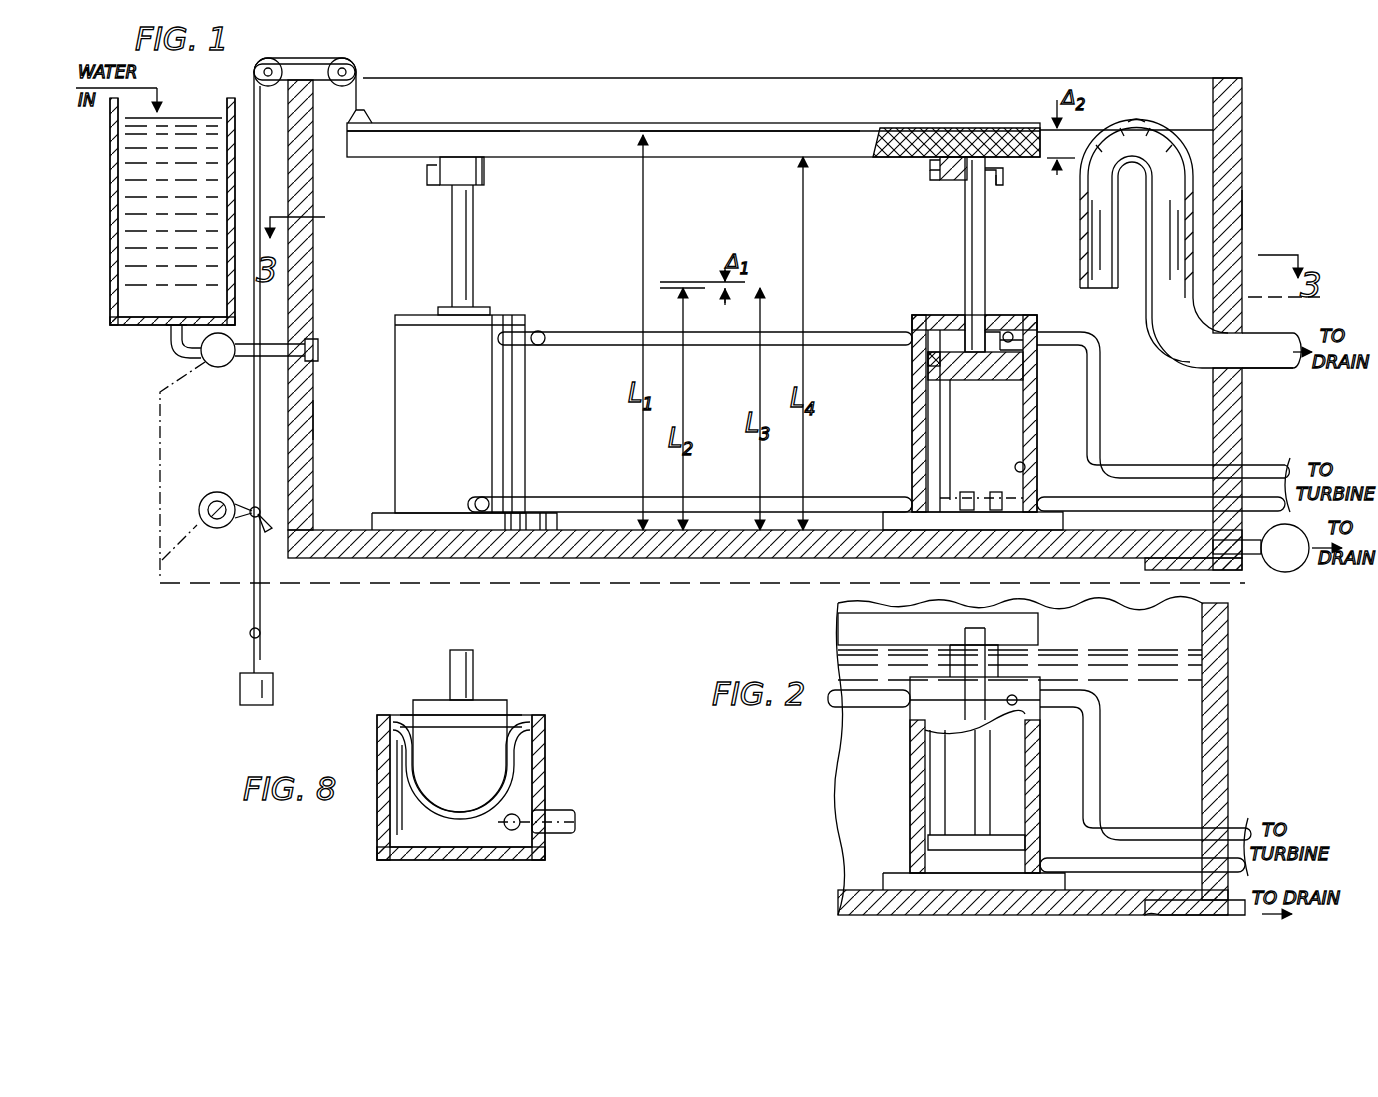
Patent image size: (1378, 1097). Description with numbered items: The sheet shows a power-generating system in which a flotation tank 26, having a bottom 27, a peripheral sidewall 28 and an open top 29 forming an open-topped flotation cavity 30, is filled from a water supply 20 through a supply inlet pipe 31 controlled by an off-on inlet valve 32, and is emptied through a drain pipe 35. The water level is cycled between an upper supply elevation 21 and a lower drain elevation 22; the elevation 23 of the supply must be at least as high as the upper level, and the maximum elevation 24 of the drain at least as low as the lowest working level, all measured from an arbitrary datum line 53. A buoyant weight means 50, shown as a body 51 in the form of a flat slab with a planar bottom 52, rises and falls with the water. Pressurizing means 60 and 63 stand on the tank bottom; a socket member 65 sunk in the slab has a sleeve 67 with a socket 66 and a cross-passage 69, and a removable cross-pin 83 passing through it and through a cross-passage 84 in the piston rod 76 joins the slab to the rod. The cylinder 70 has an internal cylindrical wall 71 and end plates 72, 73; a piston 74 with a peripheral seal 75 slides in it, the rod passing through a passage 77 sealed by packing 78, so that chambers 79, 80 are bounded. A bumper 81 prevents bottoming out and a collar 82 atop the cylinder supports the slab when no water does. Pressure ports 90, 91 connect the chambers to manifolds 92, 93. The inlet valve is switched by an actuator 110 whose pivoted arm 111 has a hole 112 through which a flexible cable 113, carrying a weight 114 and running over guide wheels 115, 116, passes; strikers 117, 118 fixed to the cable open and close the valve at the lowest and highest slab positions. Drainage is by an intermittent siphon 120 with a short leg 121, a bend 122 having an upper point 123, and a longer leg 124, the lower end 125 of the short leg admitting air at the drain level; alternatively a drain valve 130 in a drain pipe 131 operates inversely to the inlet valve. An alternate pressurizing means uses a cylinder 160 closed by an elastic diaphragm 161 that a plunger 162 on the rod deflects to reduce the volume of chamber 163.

In FIG. 1, the supply 20 is at (185, 309).
In FIG. 1, the upper supply elevation 21 is at (1092, 128).
In FIG. 1, the lower drain elevation 22 is at (672, 290).
In FIG. 2, the lower drain elevation 22 is at (1185, 652).
In FIG. 1, the elevation of the water supply 23 is at (173, 112).
In FIG. 1, the maximum elevation of the drain 24 is at (1268, 297).
In FIG. 1, the flotation tank 26 is at (286, 424).
In FIG. 2, the flotation tank 26 is at (1228, 722).
In FIG. 1, the bottom 27 is at (333, 528).
In FIG. 1, the peripheral sidewall 28 is at (313, 452).
In FIG. 1, the open top 29 is at (1200, 78).
In FIG. 1, the flotation cavity 30 is at (1178, 409).
In FIG. 1, the supply inlet pipe 31 is at (192, 352).
In FIG. 1, the inlet valve 32 is at (214, 368).
In FIG. 1, the drain pipe 35 is at (1268, 372).
In FIG. 1, the weight means 50 is at (734, 156).
In FIG. 2, the weight means 50 is at (1040, 624).
In FIG. 1, the body 51 is at (798, 120).
In FIG. 1, the planar bottom 52 is at (556, 148).
In FIG. 1, the datum line 53 is at (598, 528).
In FIG. 1, the pressurizing means 60 is at (973, 385).
In FIG. 2, the pressurizing means 60 is at (1044, 824).
In FIG. 1, the pressurizing means 63 is at (530, 452).
In FIG. 1, the socket member 65 is at (940, 166).
In FIG. 1, the socket 66 is at (958, 186).
In FIG. 1, the sleeve 67 is at (938, 178).
In FIG. 1, the cross-passage 69 is at (990, 186).
In FIG. 1, the cylinder 70 is at (1037, 440).
In FIG. 1, the cylindrical wall 71 is at (1025, 468).
In FIG. 1, the end plate 72 is at (912, 322).
In FIG. 1, the end plate 73 is at (940, 500).
In FIG. 1, the piston 74 is at (950, 372).
In FIG. 1, the peripheral seal 75 is at (912, 372).
In FIG. 1, the piston rod 76 is at (985, 272).
In FIG. 8, the piston rod 76 is at (448, 672).
In FIG. 1, the passage 77 is at (965, 318).
In FIG. 1, the packing 78 is at (1000, 316).
In FIG. 1, the chamber 79 is at (1000, 436).
In FIG. 1, the chamber 80 is at (1032, 352).
In FIG. 1, the bumper 81 is at (958, 530).
In FIG. 1, the collar 82 is at (490, 309).
In FIG. 1, the cross-pin 83 is at (1003, 180).
In FIG. 1, the cross-passage 84 is at (998, 140).
In FIG. 1, the pressure port 90 is at (976, 492).
In FIG. 1, the pressure port 91 is at (1012, 335).
In FIG. 1, the manifold 92 is at (868, 496).
In FIG. 2, the manifold 92 is at (1096, 860).
In FIG. 8, the manifold 92 is at (560, 812).
In FIG. 1, the manifold 93 is at (1104, 460).
In FIG. 2, the manifold 93 is at (1100, 772).
In FIG. 1, the actuator 110 is at (200, 510).
In FIG. 1, the pivoted arm 111 is at (245, 520).
In FIG. 1, the hole 112 is at (258, 520).
In FIG. 1, the flexible cable 113 is at (258, 606).
In FIG. 1, the weight 114 is at (243, 705).
In FIG. 1, the guide wheel 115 is at (270, 58).
In FIG. 1, the guide wheel 116 is at (352, 60).
In FIG. 1, the striker 117 is at (250, 635).
In FIG. 1, the striker 118 is at (251, 508).
In FIG. 1, the intermittent siphon 120 is at (1162, 231).
In FIG. 1, the short leg 121 is at (1080, 238).
In FIG. 1, the bend 122 is at (1242, 126).
In FIG. 1, the upper point 123 is at (1142, 126).
In FIG. 1, the longer leg 124 is at (1243, 193).
In FIG. 1, the lower end 125 is at (1100, 292).
In FIG. 1, the drain valve 130 is at (1290, 572).
In FIG. 1, the drain pipe 131 is at (1262, 566).
In FIG. 8, the cylinder 160 is at (540, 768).
In FIG. 8, the elastic diaphragm 161 is at (520, 722).
In FIG. 8, the plunger 162 is at (486, 700).
In FIG. 8, the chamber 163 is at (452, 841).